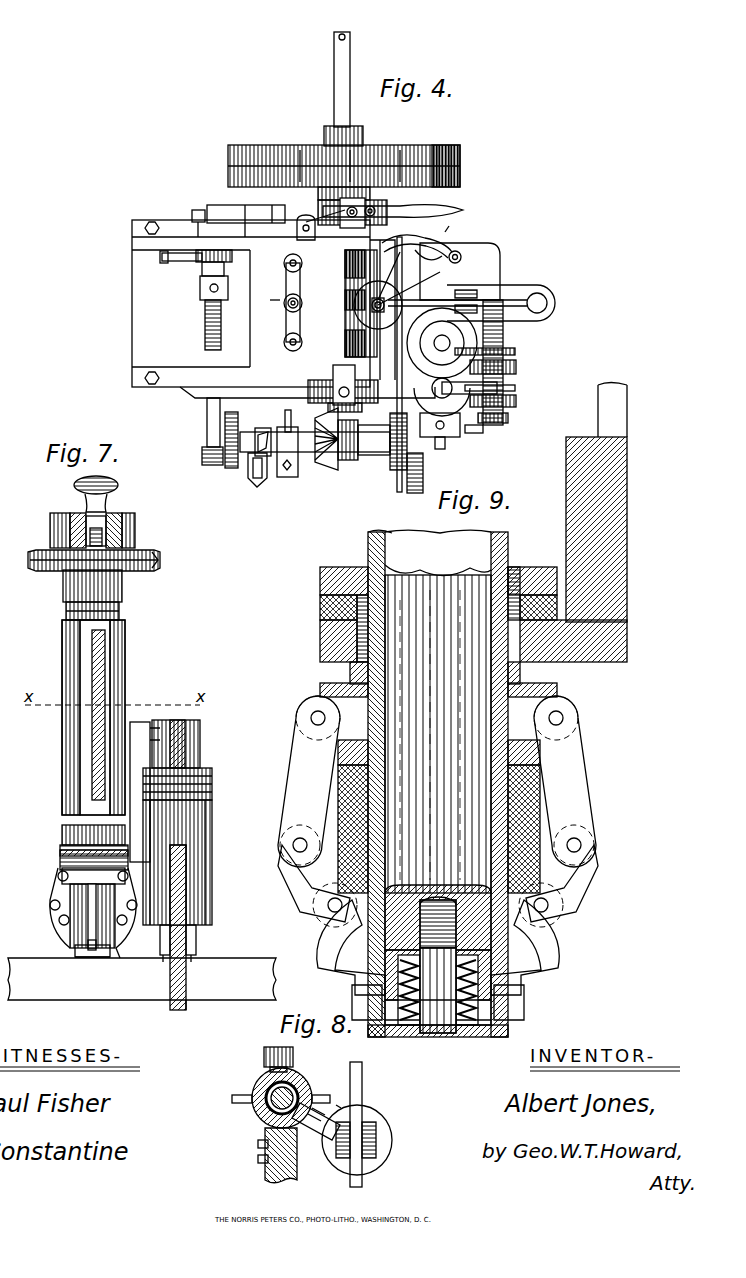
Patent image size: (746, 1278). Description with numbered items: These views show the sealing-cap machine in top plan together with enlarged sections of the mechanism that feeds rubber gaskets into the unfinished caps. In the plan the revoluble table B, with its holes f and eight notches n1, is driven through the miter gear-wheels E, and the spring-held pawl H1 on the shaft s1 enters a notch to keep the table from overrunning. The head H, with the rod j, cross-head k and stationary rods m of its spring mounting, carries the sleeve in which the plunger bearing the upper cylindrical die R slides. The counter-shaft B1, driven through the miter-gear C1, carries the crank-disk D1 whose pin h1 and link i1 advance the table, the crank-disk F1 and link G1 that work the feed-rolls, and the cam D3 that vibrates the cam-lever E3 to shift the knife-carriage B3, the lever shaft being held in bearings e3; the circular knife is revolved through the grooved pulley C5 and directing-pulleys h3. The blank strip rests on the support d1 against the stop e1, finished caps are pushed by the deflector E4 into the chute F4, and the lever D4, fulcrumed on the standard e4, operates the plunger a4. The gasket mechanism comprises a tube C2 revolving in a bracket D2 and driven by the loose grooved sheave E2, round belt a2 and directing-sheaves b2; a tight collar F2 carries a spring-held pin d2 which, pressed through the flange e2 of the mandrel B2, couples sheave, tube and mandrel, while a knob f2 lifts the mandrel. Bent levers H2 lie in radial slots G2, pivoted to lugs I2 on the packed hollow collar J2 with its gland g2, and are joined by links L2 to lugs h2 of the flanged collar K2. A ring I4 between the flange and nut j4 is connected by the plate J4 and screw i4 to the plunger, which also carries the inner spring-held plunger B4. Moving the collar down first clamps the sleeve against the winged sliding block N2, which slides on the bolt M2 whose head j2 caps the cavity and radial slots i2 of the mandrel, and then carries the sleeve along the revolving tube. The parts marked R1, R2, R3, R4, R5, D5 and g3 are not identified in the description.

In FIG. 4, the stop e1 is at (346, 35).
In FIG. 4, the tin-plate blank-strip support d1 is at (350, 72).
In FIG. 4, the chute F4 is at (446, 145).
In FIG. 4, the large gear R5 is at (228, 168).
In FIG. 4, the deflector E4 is at (465, 185).
In FIG. 4, the spring-held pawl H1 is at (455, 205).
In FIG. 4, the shaft s1 is at (493, 235).
In FIG. 4, the notches n1 is at (480, 247).
In FIG. 4, the holes f is at (450, 221).
In FIG. 4, the carrier body R4 is at (505, 272).
In FIG. 7, the carrier body R4 is at (212, 793).
In FIG. 8, the carrier body R4 is at (388, 1128).
In FIG. 4, the standard e4 is at (550, 290).
In FIG. 4, the lever D4 is at (562, 305).
In FIG. 7, the lever D4 is at (190, 728).
In FIG. 8, the lever D4 is at (362, 1088).
In FIG. 4, the adjusting screw D5 is at (196, 300).
In FIG. 4, the rod j is at (281, 316).
In FIG. 4, the upper cylindrical die R is at (267, 300).
In FIG. 4, the stationary rods m is at (303, 262).
In FIG. 4, the cross-head k is at (308, 286).
In FIG. 4, the head H is at (373, 308).
In FIG. 4, the revoluble table B is at (415, 270).
In FIG. 7, the revoluble table B is at (142, 979).
In FIG. 4, the directing-sheaves b2 is at (510, 357).
In FIG. 4, the nut g3 is at (527, 371).
In FIG. 4, the grooved pulley C5 is at (526, 388).
In FIG. 4, the directing-pulleys h3 is at (540, 407).
In FIG. 4, the bracket R3 is at (462, 437).
In FIG. 4, the bearings e3 is at (508, 442).
In FIG. 4, the carriage B3 is at (466, 453).
In FIG. 4, the link G1 is at (420, 471).
In FIG. 4, the crank-disk F1 is at (388, 478).
In FIG. 4, the gear block R1 is at (354, 388).
In FIG. 4, the counter-shaft B1 is at (352, 448).
In FIG. 4, the miter-gear C1 is at (298, 470).
In FIG. 4, the cam-lever E3 is at (265, 490).
In FIG. 4, the cam D3 is at (247, 470).
In FIG. 4, the crank-disk D1 is at (238, 425).
In FIG. 4, the pin h1 is at (200, 456).
In FIG. 4, the link i1 is at (207, 416).
In FIG. 7, the knob f2 is at (108, 482).
In FIG. 7, the tight collar F2 is at (50, 528).
In FIG. 7, the spring-held pin d2 is at (73, 512).
In FIG. 7, the flange e2 is at (118, 512).
In FIG. 7, the loose grooved sheave E2 is at (140, 552).
In FIG. 7, the round belt a2 is at (160, 560).
In FIG. 7, the tube C2 is at (119, 608).
In FIG. 9, the tube C2 is at (508, 548).
In FIG. 8, the tube C2 is at (265, 1080).
In FIG. 7, the bracket D2 is at (125, 670).
In FIG. 9, the bracket D2 is at (495, 1038).
In FIG. 8, the bracket D2 is at (248, 1090).
In FIG. 7, the miter gear-wheels E is at (91, 717).
In FIG. 7, the plunger a4 is at (215, 845).
In FIG. 7, the plate J4 is at (152, 833).
In FIG. 9, the plate J4 is at (627, 538).
In FIG. 8, the plate J4 is at (300, 1148).
In FIG. 7, the ring I4 is at (62, 832).
In FIG. 9, the ring I4 is at (320, 642).
In FIG. 7, the nut j4 is at (48, 846).
In FIG. 9, the nut j4 is at (318, 590).
In FIG. 7, the flanged collar K2 is at (60, 858).
In FIG. 9, the flanged collar K2 is at (525, 675).
In FIG. 7, the bent levers H2 is at (55, 925).
In FIG. 9, the bent levers H2 is at (320, 945).
In FIG. 7, the inner spring-held plunger B4 is at (196, 945).
In FIG. 7, the radial slots G2 is at (72, 955).
In FIG. 9, the radial slots G2 is at (368, 1000).
In FIG. 7, the head j2 is at (95, 955).
In FIG. 9, the head j2 is at (455, 1038).
In FIG. 7, the lugs I2 is at (120, 950).
In FIG. 9, the lugs I2 is at (565, 915).
In FIG. 7, the screw i4 is at (195, 995).
In FIG. 8, the screw i4 is at (337, 1096).
In FIG. 9, the mandrel B2 is at (432, 592).
In FIG. 8, the mandrel B2 is at (303, 1083).
In FIG. 9, the cap R2 is at (393, 578).
In FIG. 8, the cap R2 is at (255, 1122).
In FIG. 9, the links L2 is at (437, 781).
In FIG. 9, the lugs h2 is at (326, 716).
In FIG. 9, the gland g2 is at (578, 750).
In FIG. 9, the hollow collar J2 is at (598, 810).
In FIG. 9, the sliding block N2 is at (494, 965).
In FIG. 9, the bolt M2 is at (438, 990).
In FIG. 9, the radial slots i2 is at (405, 1038).